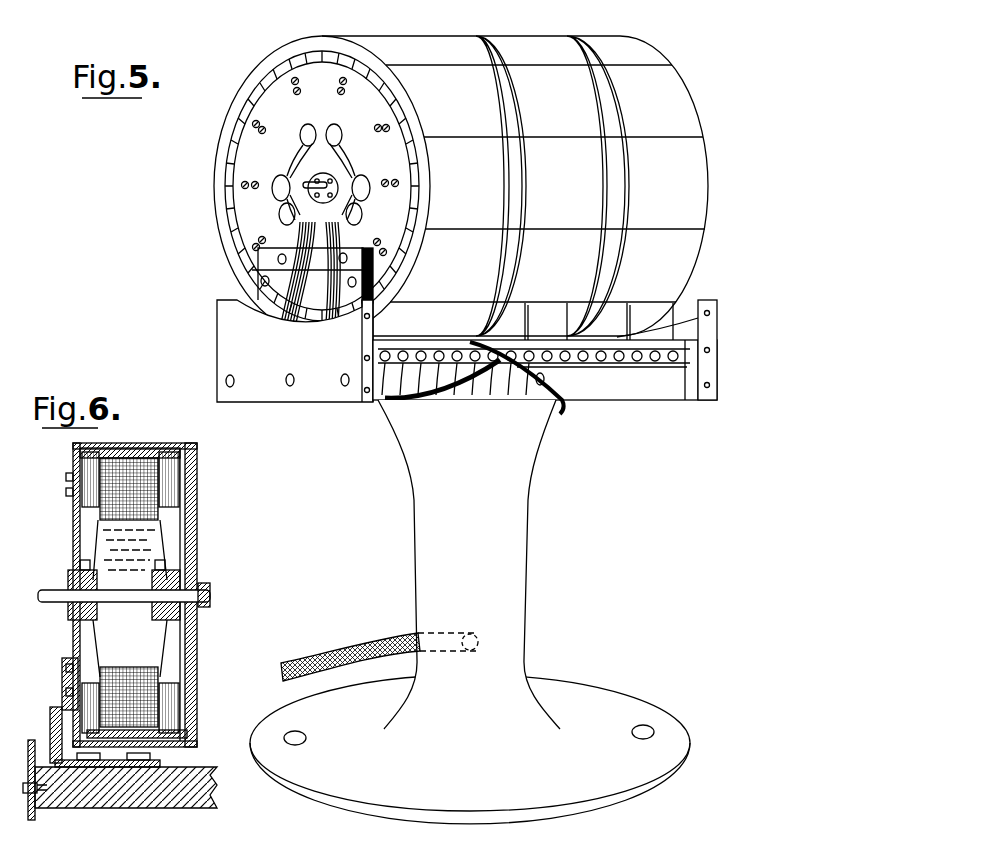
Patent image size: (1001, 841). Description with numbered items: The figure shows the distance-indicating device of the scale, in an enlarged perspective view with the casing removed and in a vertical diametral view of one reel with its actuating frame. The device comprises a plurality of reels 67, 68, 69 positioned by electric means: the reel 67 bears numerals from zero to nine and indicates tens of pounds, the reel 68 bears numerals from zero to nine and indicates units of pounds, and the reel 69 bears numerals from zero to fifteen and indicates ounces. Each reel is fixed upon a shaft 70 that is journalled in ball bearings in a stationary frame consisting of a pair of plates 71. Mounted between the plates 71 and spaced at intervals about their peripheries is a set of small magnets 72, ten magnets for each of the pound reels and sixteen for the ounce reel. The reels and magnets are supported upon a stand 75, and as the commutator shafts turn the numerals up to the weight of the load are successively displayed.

In FIG. 5, the reel 67 is at (373, 42).
In FIG. 5, the reel 68 is at (477, 43).
In FIG. 5, the reel 69 is at (631, 51).
In FIG. 5, the shaft 70 is at (310, 187).
In FIG. 6, the shaft 70 is at (210, 597).
In FIG. 5, the plate 71 is at (253, 150).
In FIG. 6, the plate 71 is at (73, 532).
In FIG. 6, the magnet 72 is at (137, 463).
In FIG. 5, the stand 75 is at (517, 495).